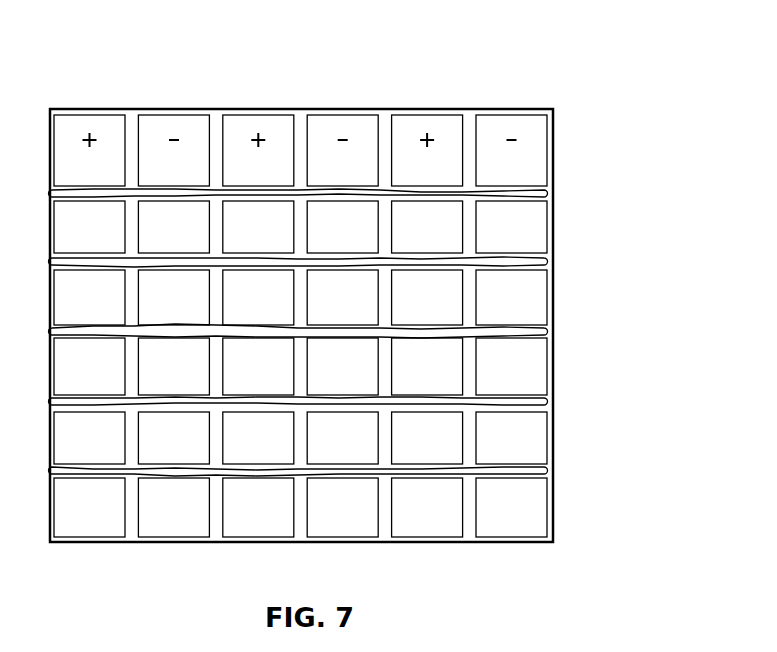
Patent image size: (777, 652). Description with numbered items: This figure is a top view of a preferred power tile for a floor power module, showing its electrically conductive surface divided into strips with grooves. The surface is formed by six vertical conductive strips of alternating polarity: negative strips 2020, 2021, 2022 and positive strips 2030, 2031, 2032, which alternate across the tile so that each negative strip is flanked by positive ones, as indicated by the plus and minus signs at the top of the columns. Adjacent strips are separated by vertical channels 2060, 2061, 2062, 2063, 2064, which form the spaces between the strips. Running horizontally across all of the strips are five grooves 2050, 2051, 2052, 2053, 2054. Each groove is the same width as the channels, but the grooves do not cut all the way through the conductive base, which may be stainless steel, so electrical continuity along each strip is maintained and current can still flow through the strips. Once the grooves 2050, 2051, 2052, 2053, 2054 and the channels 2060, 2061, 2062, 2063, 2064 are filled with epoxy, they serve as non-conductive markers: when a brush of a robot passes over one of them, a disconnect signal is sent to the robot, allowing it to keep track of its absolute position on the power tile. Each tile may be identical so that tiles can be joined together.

The negative strip 2020 is at (508, 512).
The negative strip 2021 is at (327, 512).
The negative strip 2022 is at (158, 512).
The positive strip 2030 is at (415, 512).
The positive strip 2031 is at (245, 512).
The positive strip 2032 is at (100, 512).
The groove 2050 is at (548, 192).
The groove 2051 is at (545, 262).
The groove 2052 is at (548, 332).
The groove 2053 is at (547, 401).
The groove 2054 is at (548, 471).
The channel 2060 is at (472, 120).
The channel 2061 is at (385, 120).
The channel 2062 is at (300, 120).
The channel 2063 is at (217, 120).
The channel 2064 is at (132, 120).